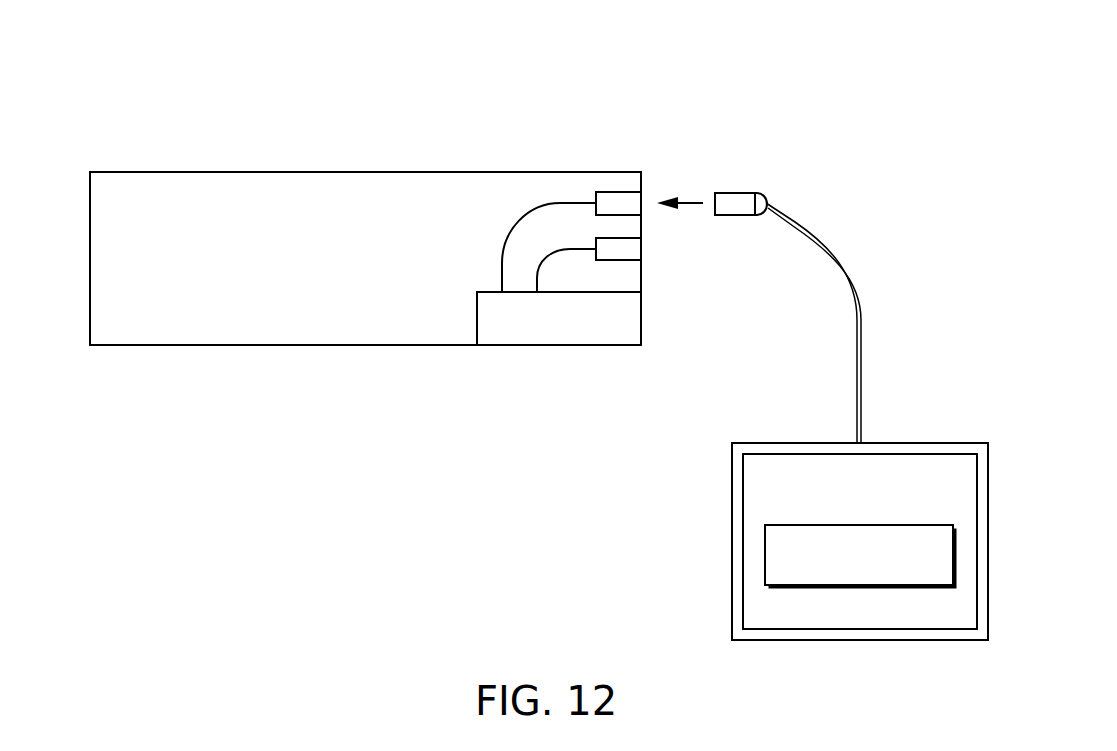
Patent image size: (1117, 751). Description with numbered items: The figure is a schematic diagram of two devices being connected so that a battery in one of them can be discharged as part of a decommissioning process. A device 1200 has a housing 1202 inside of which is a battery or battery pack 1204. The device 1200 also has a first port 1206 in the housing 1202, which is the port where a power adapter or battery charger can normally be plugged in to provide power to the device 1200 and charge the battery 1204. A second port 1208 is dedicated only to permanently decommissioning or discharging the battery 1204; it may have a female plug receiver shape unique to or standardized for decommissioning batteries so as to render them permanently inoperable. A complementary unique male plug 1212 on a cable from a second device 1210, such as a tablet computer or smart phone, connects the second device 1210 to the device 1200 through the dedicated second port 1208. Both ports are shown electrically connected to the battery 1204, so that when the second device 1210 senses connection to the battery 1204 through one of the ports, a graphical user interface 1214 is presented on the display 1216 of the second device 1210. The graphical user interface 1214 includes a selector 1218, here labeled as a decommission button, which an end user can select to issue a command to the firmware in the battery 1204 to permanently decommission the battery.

The device 1200 is at (180, 74).
The housing 1202 is at (352, 172).
The battery 1204 is at (493, 323).
The first port 1206 is at (618, 192).
The second port 1208 is at (641, 249).
The second device 1210 is at (800, 443).
The male plug 1212 is at (740, 193).
The graphical user interface 1214 is at (768, 502).
The display 1216 is at (740, 542).
The selector 1218 is at (858, 525).